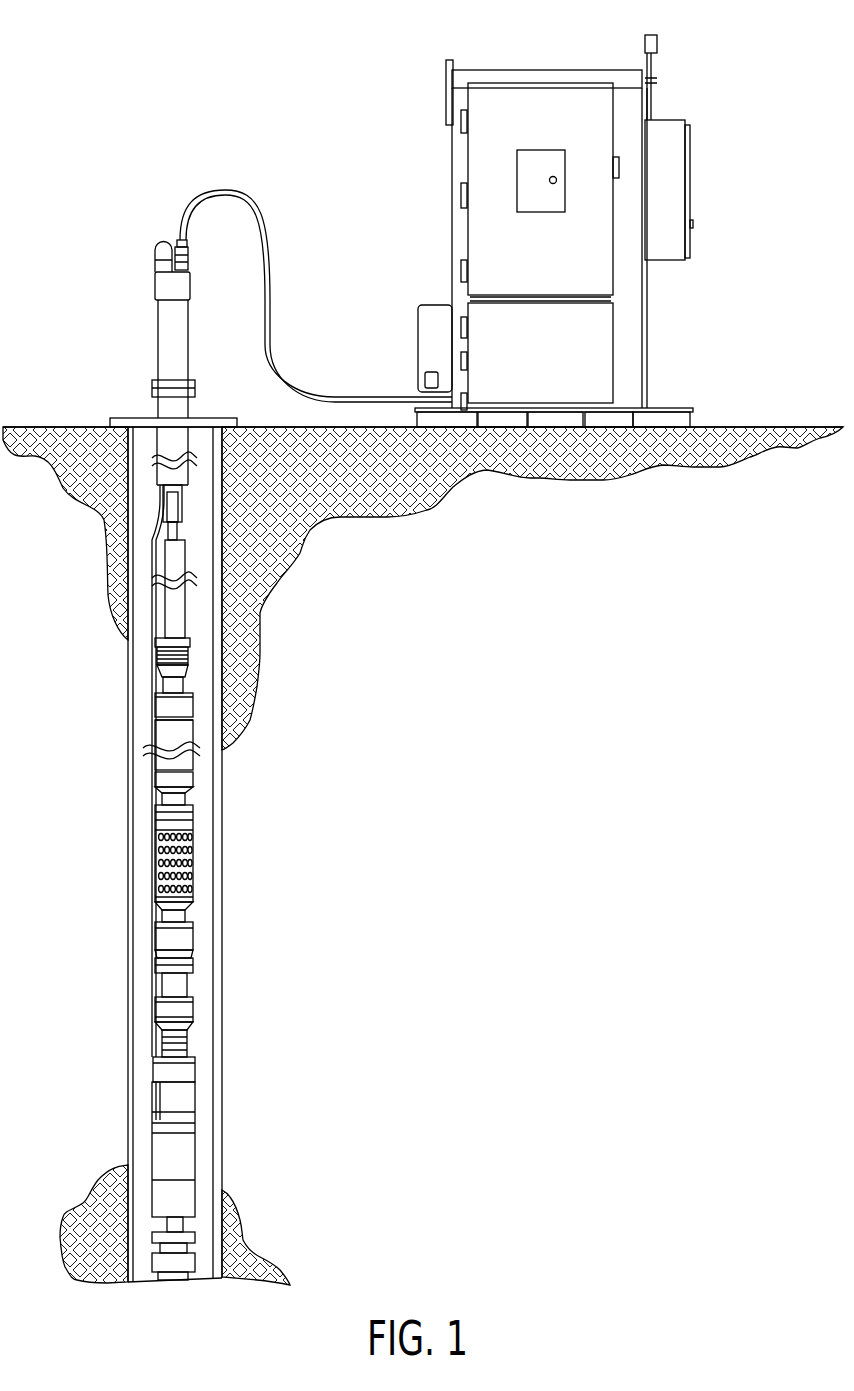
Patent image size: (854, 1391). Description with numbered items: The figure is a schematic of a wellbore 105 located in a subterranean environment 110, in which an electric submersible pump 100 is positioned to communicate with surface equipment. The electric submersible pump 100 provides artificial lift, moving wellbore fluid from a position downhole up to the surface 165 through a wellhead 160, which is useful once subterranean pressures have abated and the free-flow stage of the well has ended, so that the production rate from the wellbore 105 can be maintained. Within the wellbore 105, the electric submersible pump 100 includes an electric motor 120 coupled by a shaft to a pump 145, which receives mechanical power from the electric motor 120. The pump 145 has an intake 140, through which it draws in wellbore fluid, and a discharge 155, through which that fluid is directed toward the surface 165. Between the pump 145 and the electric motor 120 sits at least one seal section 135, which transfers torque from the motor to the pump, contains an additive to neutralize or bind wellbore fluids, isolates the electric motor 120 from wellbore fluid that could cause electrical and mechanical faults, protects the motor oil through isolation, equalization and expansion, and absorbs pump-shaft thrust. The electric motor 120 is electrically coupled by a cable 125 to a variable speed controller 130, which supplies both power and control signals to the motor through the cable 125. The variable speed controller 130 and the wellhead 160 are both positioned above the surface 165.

The electric submersible pump 100 is at (187, 853).
The wellbore 105 is at (140, 812).
The subterranean environment 110 is at (474, 993).
The electric motor 120 is at (162, 1140).
The cable 125 is at (153, 912).
The variable speed controller 130 is at (555, 95).
The seal section 135 is at (178, 985).
The intake 140 is at (162, 870).
The pump 145 is at (160, 768).
The discharge 155 is at (187, 668).
The wellhead 160 is at (158, 335).
The surface 165 is at (778, 426).